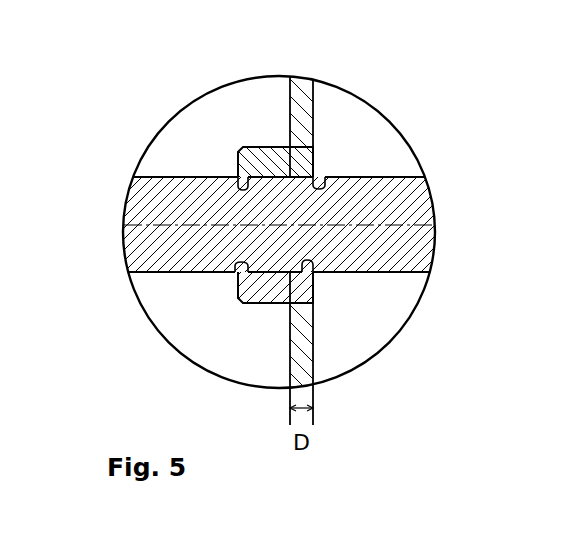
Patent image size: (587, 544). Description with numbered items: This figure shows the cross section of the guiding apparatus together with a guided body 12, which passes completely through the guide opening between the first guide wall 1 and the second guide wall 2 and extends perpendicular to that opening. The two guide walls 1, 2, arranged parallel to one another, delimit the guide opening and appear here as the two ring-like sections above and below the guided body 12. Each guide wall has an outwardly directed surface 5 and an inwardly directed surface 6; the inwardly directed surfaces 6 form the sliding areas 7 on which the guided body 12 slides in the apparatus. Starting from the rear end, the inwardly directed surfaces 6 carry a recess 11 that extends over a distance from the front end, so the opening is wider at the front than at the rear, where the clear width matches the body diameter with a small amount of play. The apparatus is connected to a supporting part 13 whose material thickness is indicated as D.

The first guide wall 1 is at (240, 150).
The second guide wall 2 is at (253, 292).
The outwardly directed surface 5 is at (275, 145).
The inwardly directed surface 6 is at (323, 178).
The sliding area 7 is at (238, 183).
The recess 11 is at (313, 143).
The guided body 12 is at (140, 243).
The supporting part 13 is at (307, 330).